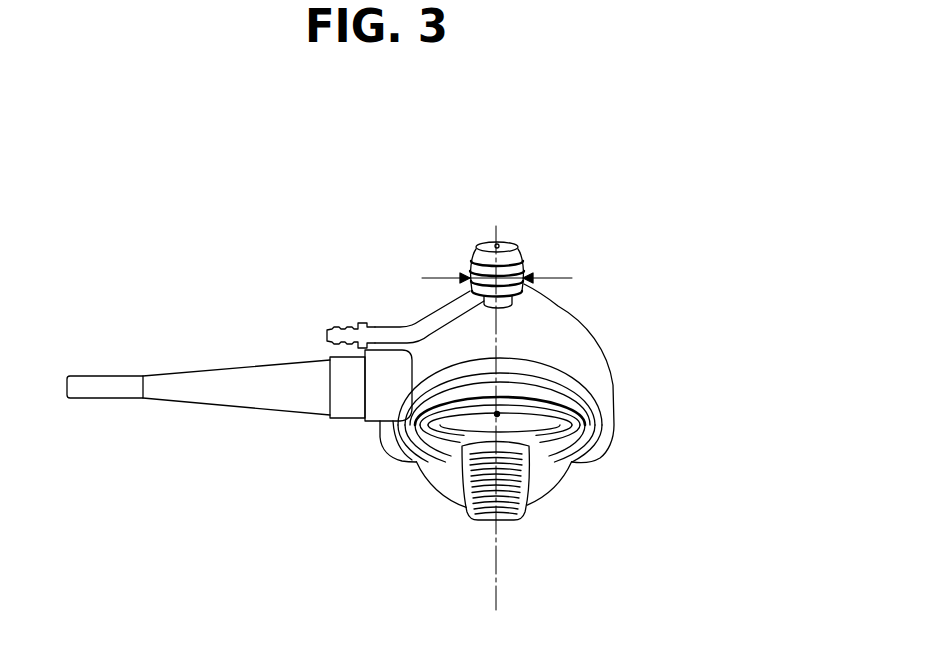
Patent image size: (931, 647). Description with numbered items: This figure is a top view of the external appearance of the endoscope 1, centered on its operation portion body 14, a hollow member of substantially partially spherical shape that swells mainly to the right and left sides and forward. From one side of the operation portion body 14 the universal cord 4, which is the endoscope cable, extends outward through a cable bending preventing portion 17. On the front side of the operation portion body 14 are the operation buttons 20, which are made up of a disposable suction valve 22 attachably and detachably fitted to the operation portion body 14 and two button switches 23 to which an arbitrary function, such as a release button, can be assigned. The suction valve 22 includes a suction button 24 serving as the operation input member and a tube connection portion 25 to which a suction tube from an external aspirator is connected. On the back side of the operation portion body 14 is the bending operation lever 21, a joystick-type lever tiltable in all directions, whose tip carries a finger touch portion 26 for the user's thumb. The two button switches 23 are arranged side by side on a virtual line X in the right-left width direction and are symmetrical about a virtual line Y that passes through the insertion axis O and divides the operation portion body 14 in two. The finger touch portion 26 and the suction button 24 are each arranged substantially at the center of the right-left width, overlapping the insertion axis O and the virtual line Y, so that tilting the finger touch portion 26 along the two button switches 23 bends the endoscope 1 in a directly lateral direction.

The endoscope 1 is at (572, 206).
The universal cord 4 is at (103, 375).
The operation portion body 14 is at (566, 313).
The cable bending preventing portion 17 is at (229, 368).
The operation buttons 20 is at (362, 200).
The bending operation lever 21 is at (527, 524).
The suction valve 22 is at (462, 277).
The button switches 23 is at (468, 287).
The suction button 24 is at (486, 243).
The tube connection portion 25 is at (390, 348).
The finger touch portion 26 is at (467, 521).
The virtual line X is at (488, 279).
The virtual line Y is at (496, 403).
The insertion axis O is at (497, 414).